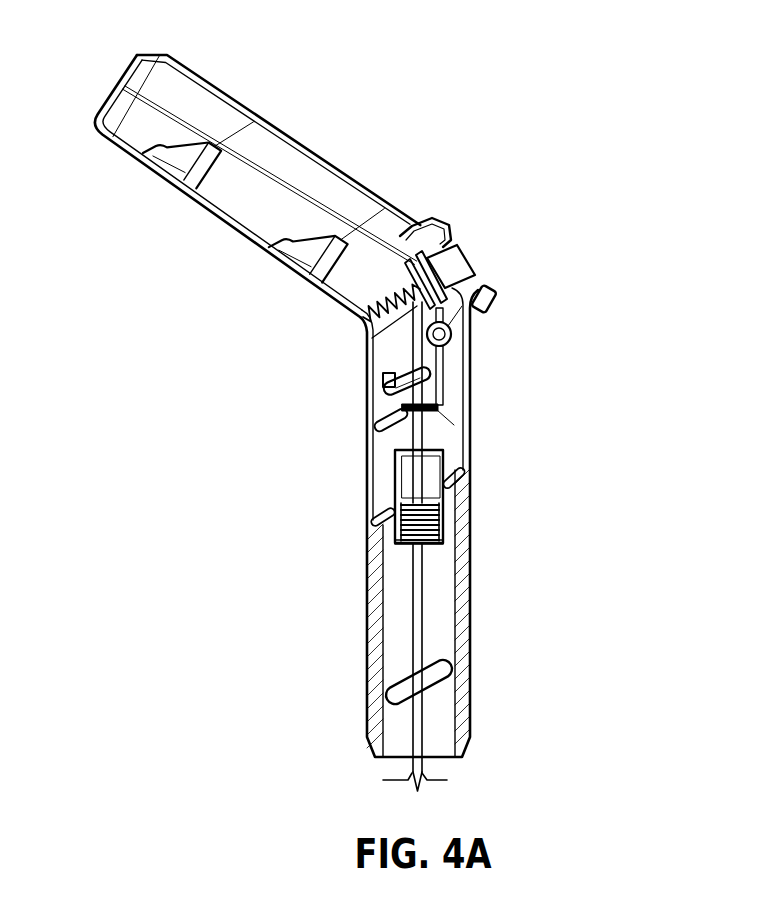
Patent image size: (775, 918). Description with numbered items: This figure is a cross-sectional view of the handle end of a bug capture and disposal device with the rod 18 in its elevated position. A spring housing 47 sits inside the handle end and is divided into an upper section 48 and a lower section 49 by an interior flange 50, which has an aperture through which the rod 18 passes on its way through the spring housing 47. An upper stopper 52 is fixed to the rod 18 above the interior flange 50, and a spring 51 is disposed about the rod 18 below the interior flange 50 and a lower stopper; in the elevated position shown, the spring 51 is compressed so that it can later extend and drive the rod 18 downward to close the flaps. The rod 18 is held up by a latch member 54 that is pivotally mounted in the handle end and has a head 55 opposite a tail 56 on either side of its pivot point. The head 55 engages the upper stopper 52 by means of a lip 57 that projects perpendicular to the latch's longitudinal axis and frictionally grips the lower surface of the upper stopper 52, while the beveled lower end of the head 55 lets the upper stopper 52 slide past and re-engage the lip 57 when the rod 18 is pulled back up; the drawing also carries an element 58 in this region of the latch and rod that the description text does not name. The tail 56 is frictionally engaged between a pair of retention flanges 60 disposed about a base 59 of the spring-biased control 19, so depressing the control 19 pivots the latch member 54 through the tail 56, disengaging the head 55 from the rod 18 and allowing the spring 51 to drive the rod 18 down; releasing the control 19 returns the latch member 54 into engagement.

The rod 18 is at (415, 710).
The control 19 is at (472, 252).
The spring housing 47 is at (396, 478).
The upper section 48 is at (378, 430).
The lower section 49 is at (382, 522).
The interior flange 50 is at (445, 505).
The spring 51 is at (445, 540).
The upper stopper 52 is at (373, 392).
The latch member 54 is at (458, 372).
The head 55 is at (466, 408).
The tail 56 is at (494, 300).
The lip 57 is at (392, 385).
The connector 58 is at (436, 422).
The base 59 is at (425, 228).
The retention flanges 60 is at (462, 265).